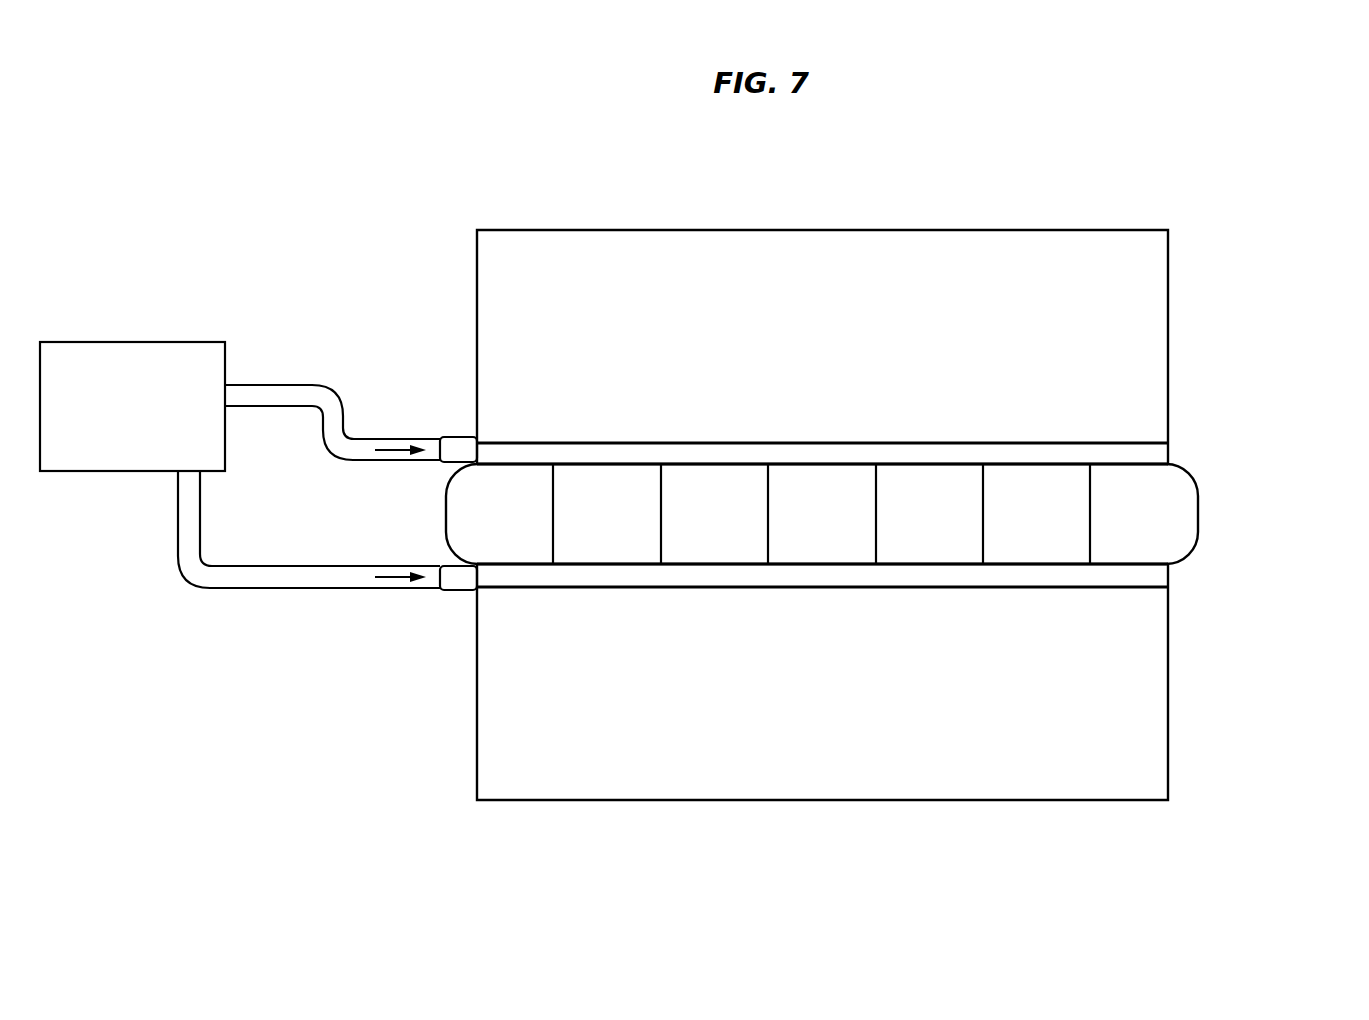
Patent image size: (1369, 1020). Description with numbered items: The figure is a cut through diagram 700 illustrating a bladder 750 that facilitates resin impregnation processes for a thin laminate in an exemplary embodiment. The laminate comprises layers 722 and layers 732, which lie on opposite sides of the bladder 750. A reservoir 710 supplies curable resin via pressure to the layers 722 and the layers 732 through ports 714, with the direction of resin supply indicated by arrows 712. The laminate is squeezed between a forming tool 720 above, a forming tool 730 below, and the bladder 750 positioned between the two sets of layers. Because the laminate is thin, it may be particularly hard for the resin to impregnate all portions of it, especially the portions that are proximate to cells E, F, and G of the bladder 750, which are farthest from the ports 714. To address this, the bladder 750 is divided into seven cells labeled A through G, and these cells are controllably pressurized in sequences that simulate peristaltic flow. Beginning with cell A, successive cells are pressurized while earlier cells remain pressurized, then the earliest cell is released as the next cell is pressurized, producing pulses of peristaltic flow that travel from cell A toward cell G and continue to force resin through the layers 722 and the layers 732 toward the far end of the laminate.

The cut through diagram 700 is at (294, 723).
The reservoir 710 is at (115, 435).
The arrows 712 is at (399, 447).
The ports 714 is at (459, 436).
The forming tool 720 is at (1168, 343).
The layers 722 is at (1168, 455).
The forming tool 730 is at (1168, 707).
The layers 732 is at (1168, 577).
The bladder 750 is at (1266, 495).